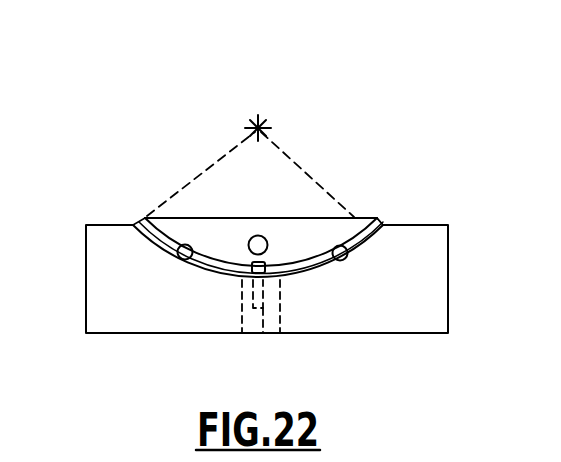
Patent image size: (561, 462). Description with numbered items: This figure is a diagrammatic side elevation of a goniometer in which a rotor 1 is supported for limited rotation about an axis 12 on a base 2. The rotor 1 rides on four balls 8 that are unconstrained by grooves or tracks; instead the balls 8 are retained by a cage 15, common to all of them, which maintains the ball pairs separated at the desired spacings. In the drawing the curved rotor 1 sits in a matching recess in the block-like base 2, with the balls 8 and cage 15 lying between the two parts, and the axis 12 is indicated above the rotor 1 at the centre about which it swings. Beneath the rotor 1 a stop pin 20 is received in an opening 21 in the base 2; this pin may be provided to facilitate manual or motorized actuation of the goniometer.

The rotor 1 is at (357, 229).
The base 2 is at (449, 327).
The balls 8 is at (179, 259).
The axis 12 is at (246, 121).
The cage 15 is at (378, 221).
The stop pin 20 is at (262, 336).
The opening 21 is at (241, 318).